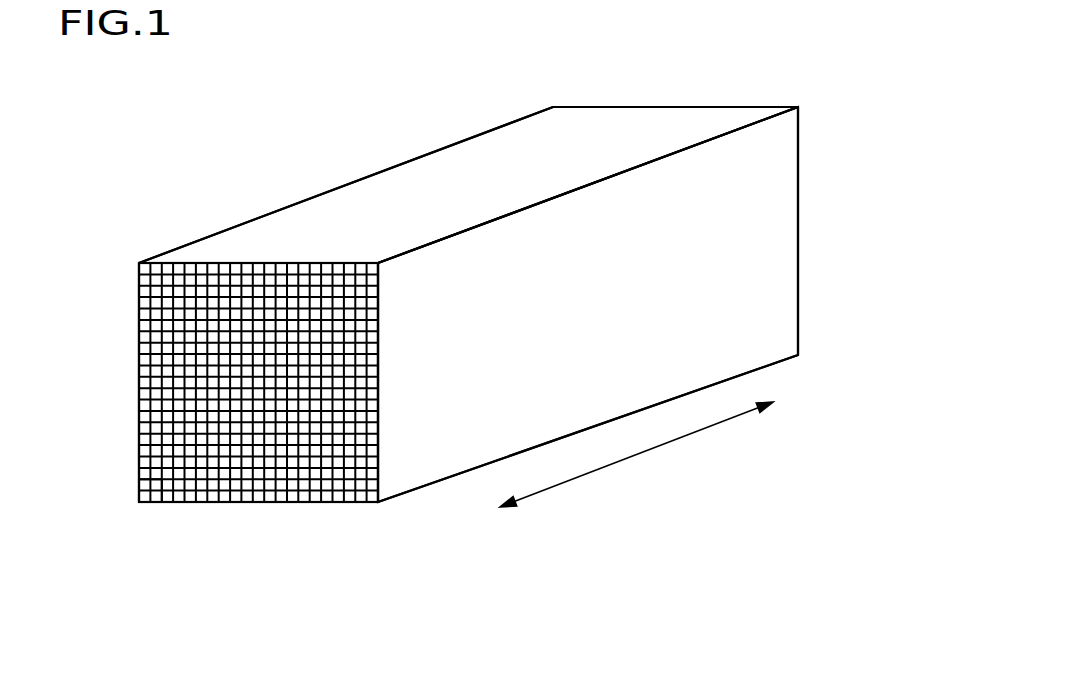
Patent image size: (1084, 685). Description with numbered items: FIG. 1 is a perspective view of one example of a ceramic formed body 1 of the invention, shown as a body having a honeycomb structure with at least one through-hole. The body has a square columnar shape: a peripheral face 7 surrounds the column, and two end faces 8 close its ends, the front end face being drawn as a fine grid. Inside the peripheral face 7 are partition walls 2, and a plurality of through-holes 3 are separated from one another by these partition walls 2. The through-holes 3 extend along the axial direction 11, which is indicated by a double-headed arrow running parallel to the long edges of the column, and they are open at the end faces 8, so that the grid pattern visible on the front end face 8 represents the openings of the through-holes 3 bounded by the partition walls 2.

The honeycomb structure 1 is at (403, 130).
The partition walls 2 is at (167, 487).
The through-holes 3 is at (168, 427).
The peripheral face 7 is at (570, 123).
The end faces 8 is at (798, 188).
The axial direction 11 is at (567, 483).